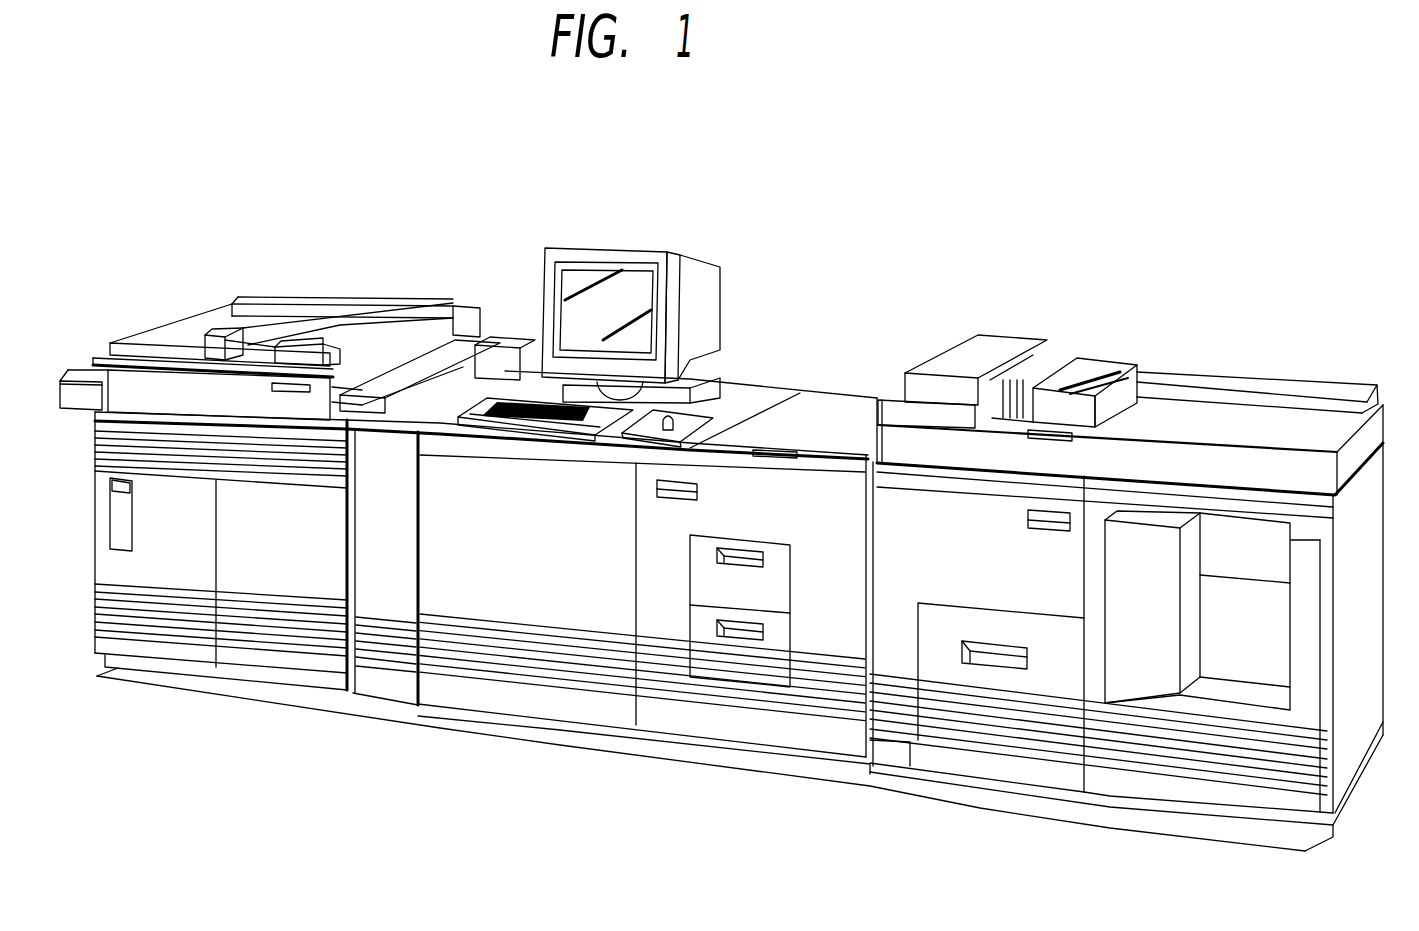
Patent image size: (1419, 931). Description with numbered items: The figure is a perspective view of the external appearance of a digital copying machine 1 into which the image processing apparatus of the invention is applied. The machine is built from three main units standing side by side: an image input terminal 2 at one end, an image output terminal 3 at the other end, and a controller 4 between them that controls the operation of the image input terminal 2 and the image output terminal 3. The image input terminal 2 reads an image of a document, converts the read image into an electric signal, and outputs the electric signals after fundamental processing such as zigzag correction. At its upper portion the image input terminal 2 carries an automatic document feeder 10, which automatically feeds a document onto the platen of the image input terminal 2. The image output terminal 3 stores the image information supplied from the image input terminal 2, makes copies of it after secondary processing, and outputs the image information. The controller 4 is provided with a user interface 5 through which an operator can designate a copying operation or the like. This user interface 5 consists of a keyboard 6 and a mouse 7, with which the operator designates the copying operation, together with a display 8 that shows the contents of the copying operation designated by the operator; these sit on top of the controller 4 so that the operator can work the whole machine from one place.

The digital copying machine 1 is at (793, 230).
The image input terminal 2 is at (288, 296).
The image output terminal 3 is at (1190, 368).
The controller 4 is at (850, 377).
The user interface 5 is at (607, 288).
The keyboard 6 is at (528, 428).
The mouse 7 is at (627, 437).
The display 8 is at (567, 300).
The automatic document feeder 10 is at (370, 317).